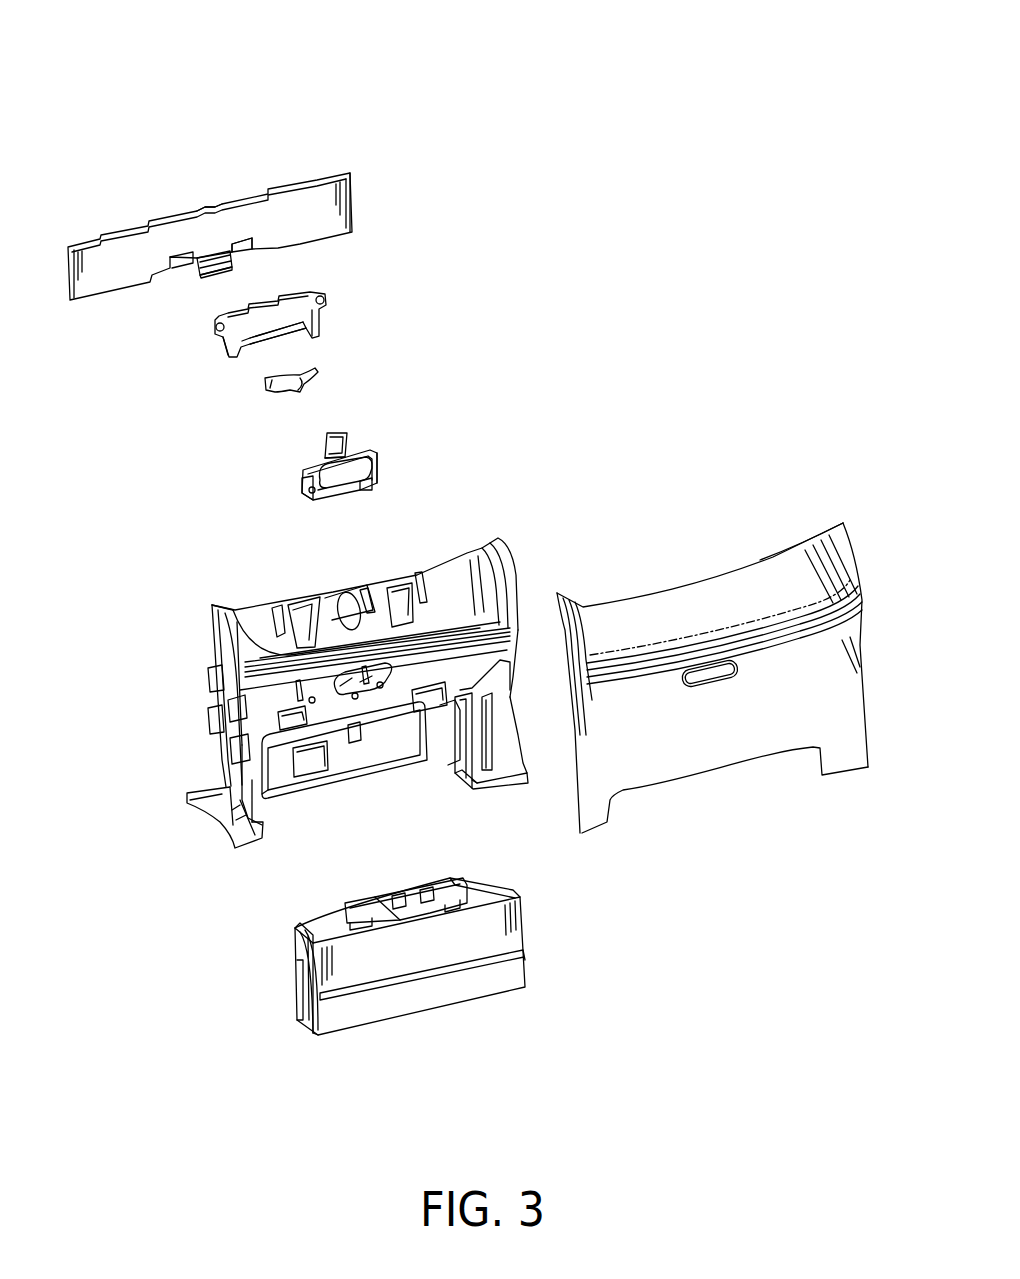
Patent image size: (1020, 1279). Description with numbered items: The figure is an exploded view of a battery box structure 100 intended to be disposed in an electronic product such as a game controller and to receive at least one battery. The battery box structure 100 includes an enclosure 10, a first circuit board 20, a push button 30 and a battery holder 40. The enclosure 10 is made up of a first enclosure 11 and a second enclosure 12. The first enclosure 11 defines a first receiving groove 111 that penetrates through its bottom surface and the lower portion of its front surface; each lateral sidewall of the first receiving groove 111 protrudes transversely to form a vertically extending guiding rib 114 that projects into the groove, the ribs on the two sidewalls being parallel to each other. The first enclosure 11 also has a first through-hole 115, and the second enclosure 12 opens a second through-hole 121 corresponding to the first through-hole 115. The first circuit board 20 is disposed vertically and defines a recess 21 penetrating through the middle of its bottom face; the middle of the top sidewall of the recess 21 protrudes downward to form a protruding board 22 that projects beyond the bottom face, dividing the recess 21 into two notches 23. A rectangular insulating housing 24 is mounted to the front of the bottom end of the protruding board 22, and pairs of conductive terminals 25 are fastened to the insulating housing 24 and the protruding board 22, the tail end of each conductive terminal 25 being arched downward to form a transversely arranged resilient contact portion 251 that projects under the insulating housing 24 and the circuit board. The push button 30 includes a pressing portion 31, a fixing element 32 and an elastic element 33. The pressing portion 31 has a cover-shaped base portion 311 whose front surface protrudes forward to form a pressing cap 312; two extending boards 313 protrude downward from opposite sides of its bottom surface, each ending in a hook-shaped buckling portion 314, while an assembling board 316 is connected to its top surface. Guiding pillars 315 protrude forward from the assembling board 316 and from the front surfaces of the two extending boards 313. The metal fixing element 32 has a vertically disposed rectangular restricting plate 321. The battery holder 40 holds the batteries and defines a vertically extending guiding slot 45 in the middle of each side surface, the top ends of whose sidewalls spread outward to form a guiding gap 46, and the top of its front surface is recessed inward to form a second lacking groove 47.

The battery box structure 100 is at (215, 42).
The enclosure 10 is at (648, 485).
The first enclosure 11 is at (505, 572).
The second enclosure 12 is at (638, 600).
The first receiving groove 111 is at (390, 760).
The guiding rib 114 is at (458, 780).
The first through-hole 115 is at (362, 673).
The second through-hole 121 is at (720, 670).
The first circuit board 20 is at (118, 243).
The recess 21 is at (188, 264).
The protruding board 22 is at (207, 257).
The notch 23 is at (237, 241).
The insulating housing 24 is at (230, 257).
The conductive terminal 25 is at (207, 277).
The resilient contact portion 251 is at (202, 278).
The push button 30 is at (175, 388).
The pressing portion 31 is at (303, 477).
The base portion 311 is at (375, 462).
The pressing cap 312 is at (365, 485).
The extending board 313 is at (300, 485).
The hook-shaped buckling portion 314 is at (313, 493).
The guiding pillar 315 is at (342, 437).
The assembling board 316 is at (348, 452).
The fixing element 32 is at (242, 340).
The restricting plate 321 is at (290, 322).
The elastic element 33 is at (270, 390).
The battery holder 40 is at (462, 985).
The guiding slot 45 is at (298, 980).
The guiding gap 46 is at (300, 935).
The second lacking groove 47 is at (517, 928).